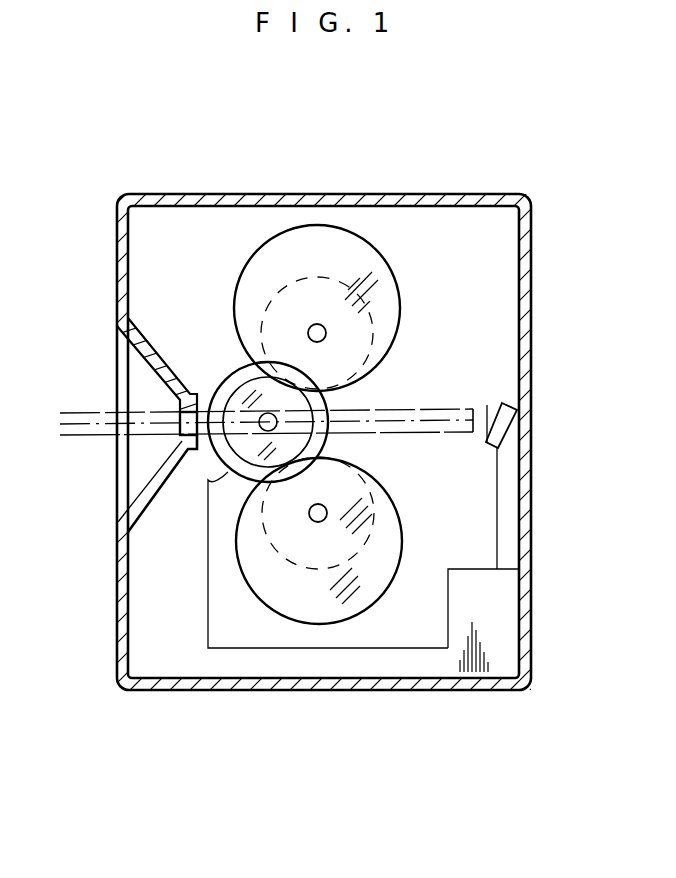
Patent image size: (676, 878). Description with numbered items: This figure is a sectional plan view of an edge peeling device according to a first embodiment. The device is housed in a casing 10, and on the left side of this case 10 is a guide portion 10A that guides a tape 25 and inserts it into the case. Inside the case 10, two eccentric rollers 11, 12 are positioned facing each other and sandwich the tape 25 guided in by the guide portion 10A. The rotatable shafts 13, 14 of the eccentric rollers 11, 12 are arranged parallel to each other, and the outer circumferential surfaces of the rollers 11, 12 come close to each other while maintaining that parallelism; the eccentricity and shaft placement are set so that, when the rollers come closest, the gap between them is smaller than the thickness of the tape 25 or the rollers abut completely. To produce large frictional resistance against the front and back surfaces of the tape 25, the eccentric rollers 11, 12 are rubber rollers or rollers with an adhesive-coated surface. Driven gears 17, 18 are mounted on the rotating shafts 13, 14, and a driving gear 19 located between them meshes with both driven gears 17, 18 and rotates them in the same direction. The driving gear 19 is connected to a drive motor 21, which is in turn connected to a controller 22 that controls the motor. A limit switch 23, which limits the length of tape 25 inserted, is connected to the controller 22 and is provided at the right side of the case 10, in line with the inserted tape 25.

The casing 10 is at (531, 216).
The guide portion 10A is at (126, 360).
The eccentric roller 11 is at (372, 250).
The eccentric roller 12 is at (368, 598).
The rotatable shaft 13 is at (317, 324).
The rotatable shaft 14 is at (318, 522).
The driven gear 17 is at (287, 277).
The driven gear 18 is at (268, 590).
The driving gear 19 is at (240, 383).
The drive motor 21 is at (228, 472).
The controller 22 is at (510, 600).
The limit switch 23 is at (503, 425).
The tape 25 is at (82, 408).